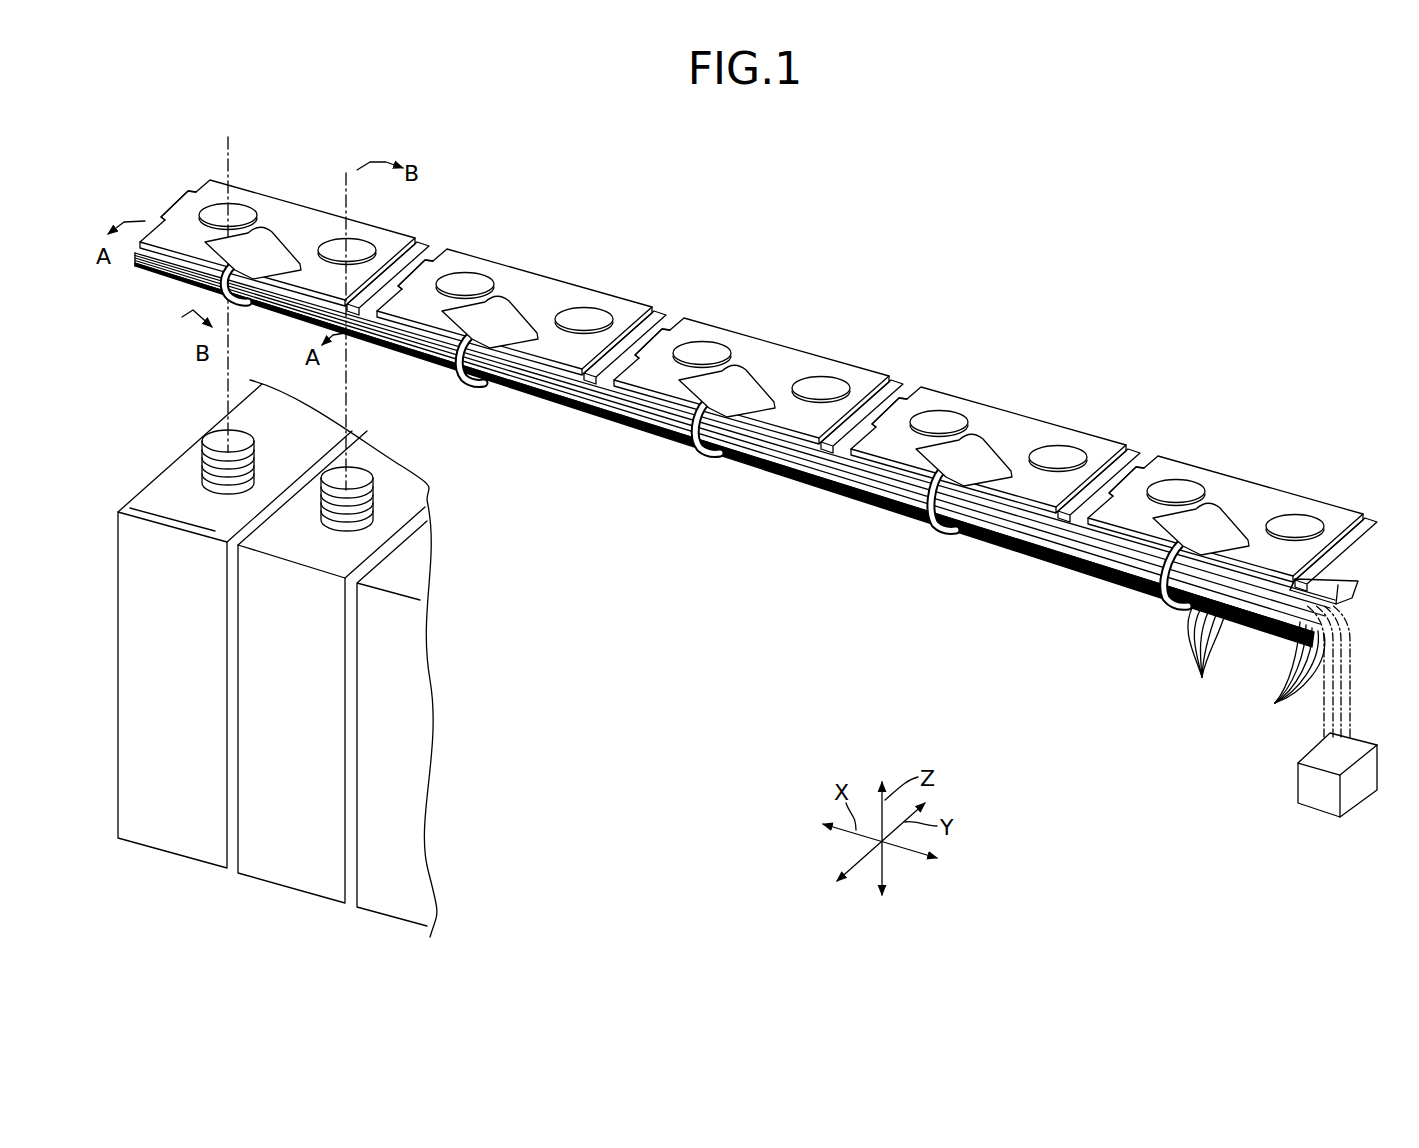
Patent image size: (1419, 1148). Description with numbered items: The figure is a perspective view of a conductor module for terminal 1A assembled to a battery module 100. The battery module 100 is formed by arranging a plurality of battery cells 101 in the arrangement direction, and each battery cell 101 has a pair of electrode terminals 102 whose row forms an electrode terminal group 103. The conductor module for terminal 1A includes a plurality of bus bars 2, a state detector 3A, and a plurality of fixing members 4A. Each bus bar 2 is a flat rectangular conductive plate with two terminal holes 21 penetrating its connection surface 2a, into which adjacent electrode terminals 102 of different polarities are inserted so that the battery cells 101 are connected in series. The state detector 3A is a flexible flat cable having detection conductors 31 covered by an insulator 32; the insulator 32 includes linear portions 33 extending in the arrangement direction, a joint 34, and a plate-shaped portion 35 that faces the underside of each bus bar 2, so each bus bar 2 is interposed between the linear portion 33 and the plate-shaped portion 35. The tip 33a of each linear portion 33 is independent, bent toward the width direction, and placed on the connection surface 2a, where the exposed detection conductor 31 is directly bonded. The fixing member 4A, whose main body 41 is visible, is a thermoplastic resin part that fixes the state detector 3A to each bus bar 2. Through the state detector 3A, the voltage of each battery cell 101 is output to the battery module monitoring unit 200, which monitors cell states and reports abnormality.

The conductor module for terminal 1A is at (665, 185).
The bus bar 2 is at (300, 197).
The connection surface 2a is at (182, 215).
The terminal hole 21 is at (228, 214).
The fixing member 4A is at (757, 327).
The main body 41 is at (282, 262).
The state detector 3A is at (1350, 573).
The detection conductor 31 is at (1293, 678).
The insulator 32 is at (1347, 612).
The linear portion 33 is at (1204, 657).
The tip 33a is at (222, 286).
The joint 34 is at (840, 463).
The plate-shaped portion 35 is at (1083, 513).
The battery module 100 is at (208, 870).
The battery cell 101 is at (182, 808).
The electrode terminal 102 is at (215, 440).
The electrode terminal group 103 is at (186, 468).
The battery module monitoring unit 200 is at (1297, 783).